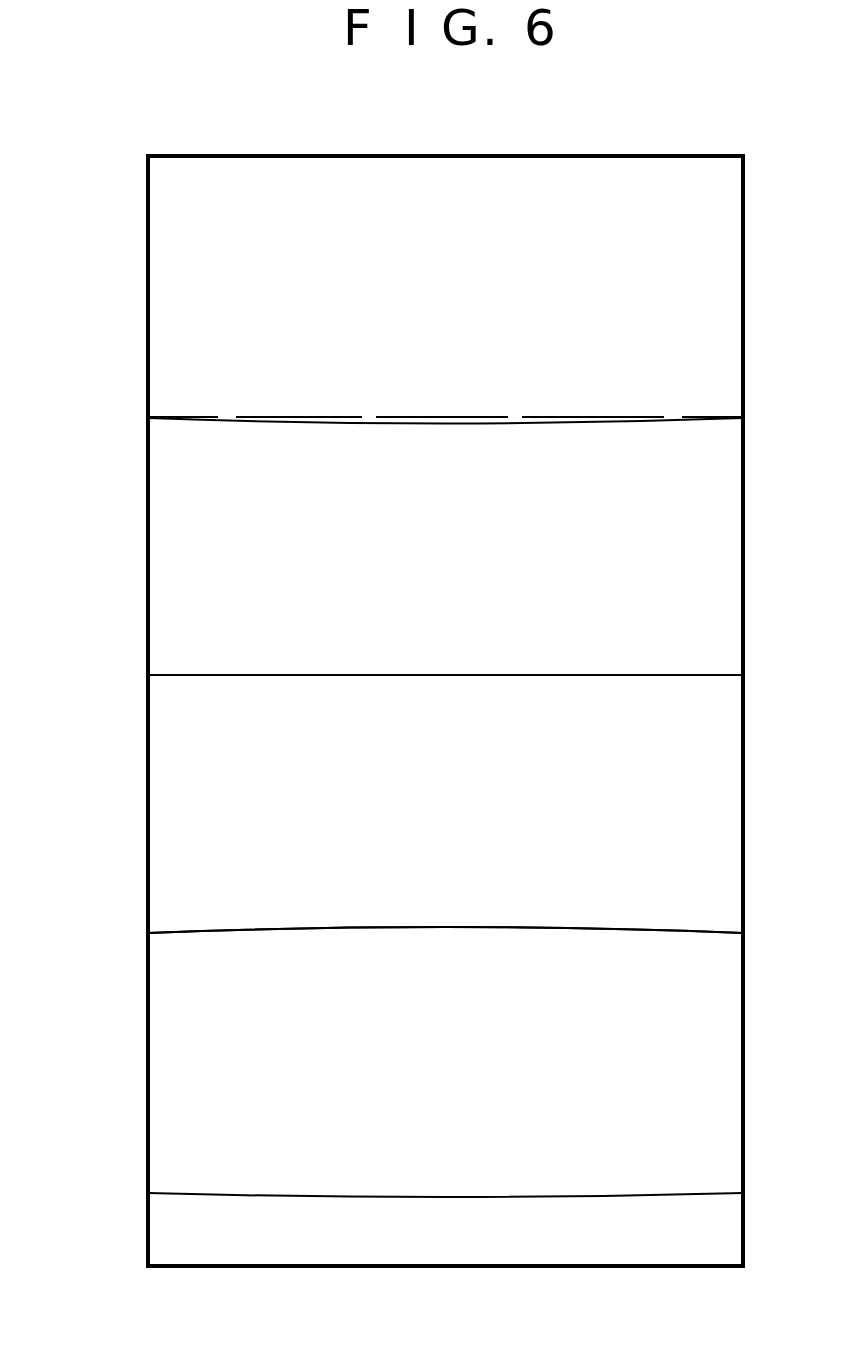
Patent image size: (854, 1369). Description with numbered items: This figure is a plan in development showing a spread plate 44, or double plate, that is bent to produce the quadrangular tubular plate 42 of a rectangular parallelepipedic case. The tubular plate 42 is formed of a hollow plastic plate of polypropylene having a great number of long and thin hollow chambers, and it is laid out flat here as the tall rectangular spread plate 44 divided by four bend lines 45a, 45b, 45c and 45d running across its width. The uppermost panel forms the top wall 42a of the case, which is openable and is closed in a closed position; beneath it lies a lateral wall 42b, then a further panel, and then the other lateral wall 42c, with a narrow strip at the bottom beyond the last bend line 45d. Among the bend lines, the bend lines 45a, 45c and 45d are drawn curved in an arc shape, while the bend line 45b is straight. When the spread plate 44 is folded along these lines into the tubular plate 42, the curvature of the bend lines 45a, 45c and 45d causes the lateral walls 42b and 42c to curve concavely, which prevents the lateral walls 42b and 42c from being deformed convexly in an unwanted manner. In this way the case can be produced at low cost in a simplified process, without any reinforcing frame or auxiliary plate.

The quadrangular tubular plate 42 is at (146, 354).
The spread plate 44 is at (437, 155).
The top wall 42a is at (468, 298).
The lateral wall 42b is at (467, 574).
The lateral wall 42c is at (460, 1077).
The bend line 45a is at (439, 424).
The bend line 45b is at (438, 677).
The bend line 45c is at (432, 929).
The bend line 45d is at (430, 1196).